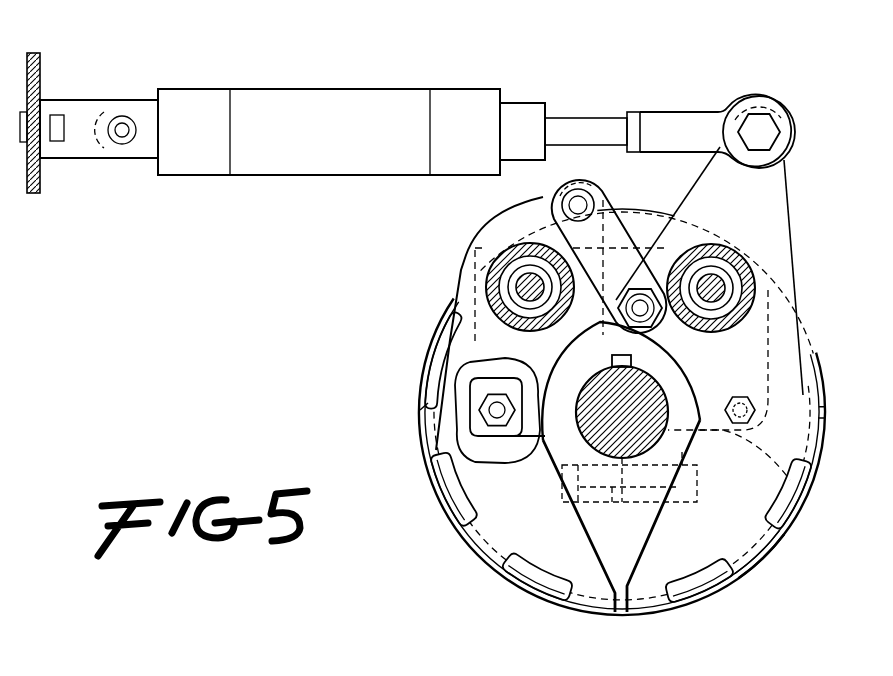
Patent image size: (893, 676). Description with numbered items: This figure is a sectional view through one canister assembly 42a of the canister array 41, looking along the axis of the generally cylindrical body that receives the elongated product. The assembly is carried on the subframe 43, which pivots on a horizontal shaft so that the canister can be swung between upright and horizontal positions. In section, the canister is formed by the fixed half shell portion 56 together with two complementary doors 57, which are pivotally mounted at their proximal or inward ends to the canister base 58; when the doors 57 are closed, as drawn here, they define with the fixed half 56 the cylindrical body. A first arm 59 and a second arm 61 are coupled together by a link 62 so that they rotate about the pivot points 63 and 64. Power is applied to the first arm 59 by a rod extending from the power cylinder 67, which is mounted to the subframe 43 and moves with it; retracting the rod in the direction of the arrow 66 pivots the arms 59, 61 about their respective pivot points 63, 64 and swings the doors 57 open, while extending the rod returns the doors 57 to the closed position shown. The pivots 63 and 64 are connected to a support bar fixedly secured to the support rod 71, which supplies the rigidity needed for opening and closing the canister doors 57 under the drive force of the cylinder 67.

The canister array 41 is at (512, 603).
The canister assembly 42a is at (408, 378).
The subframe 43 is at (46, 82).
The fixed half shell portion 56 is at (458, 302).
The doors 57 is at (572, 614).
The canister base 58 is at (816, 478).
The first arm 59 is at (762, 552).
The second arm 61 is at (474, 540).
The link 62 is at (632, 226).
The pivot point 63 is at (724, 286).
The pivot point 64 is at (530, 287).
The arrow 66 is at (586, 120).
The power cylinder 67 is at (360, 90).
The support rod 71 is at (655, 430).